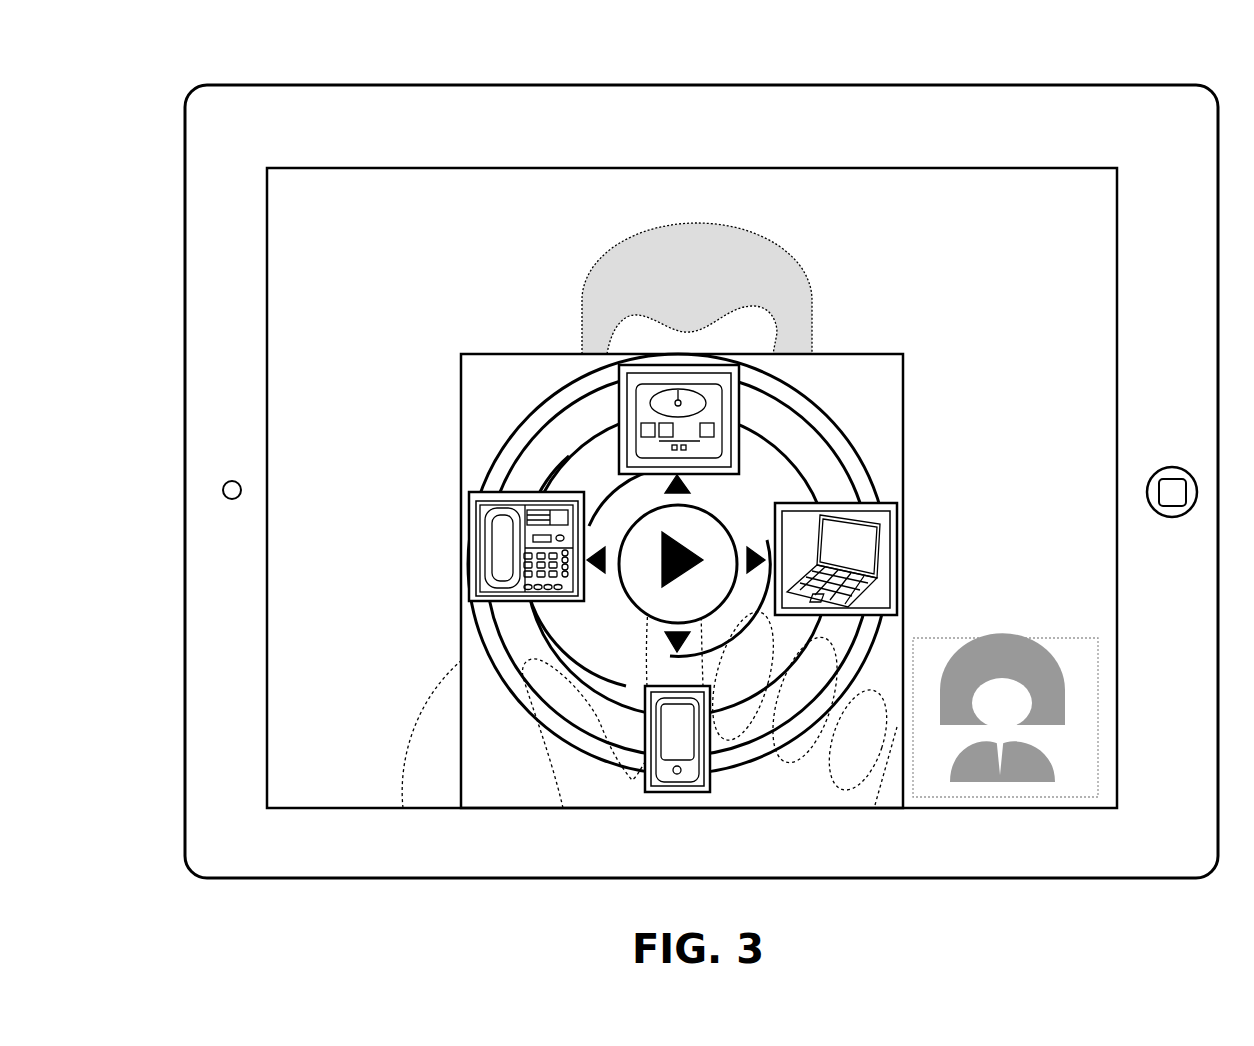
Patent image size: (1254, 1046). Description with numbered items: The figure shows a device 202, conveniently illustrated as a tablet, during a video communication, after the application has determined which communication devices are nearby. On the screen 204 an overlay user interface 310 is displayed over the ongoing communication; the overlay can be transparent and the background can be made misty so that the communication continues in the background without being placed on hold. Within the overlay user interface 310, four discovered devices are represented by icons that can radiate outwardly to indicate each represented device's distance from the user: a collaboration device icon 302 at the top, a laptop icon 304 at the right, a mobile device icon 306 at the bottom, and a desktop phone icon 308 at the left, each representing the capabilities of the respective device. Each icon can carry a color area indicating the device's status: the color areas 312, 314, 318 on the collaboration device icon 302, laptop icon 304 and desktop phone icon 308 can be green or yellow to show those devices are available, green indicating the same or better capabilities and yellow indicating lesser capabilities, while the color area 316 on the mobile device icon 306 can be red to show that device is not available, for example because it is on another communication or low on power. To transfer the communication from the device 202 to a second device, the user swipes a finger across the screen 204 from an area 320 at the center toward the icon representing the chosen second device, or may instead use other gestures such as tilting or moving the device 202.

The device 202 is at (1122, 125).
The screen 204 is at (342, 440).
The collaboration device icon 302 is at (707, 407).
The laptop icon 304 is at (880, 537).
The mobile device icon 306 is at (697, 772).
The desktop phone icon 308 is at (482, 561).
The overlay user interface 310 is at (683, 574).
The color area 312 is at (627, 372).
The color area 314 is at (867, 503).
The color area 316 is at (682, 792).
The color area 318 is at (522, 603).
The area 320 is at (624, 610).